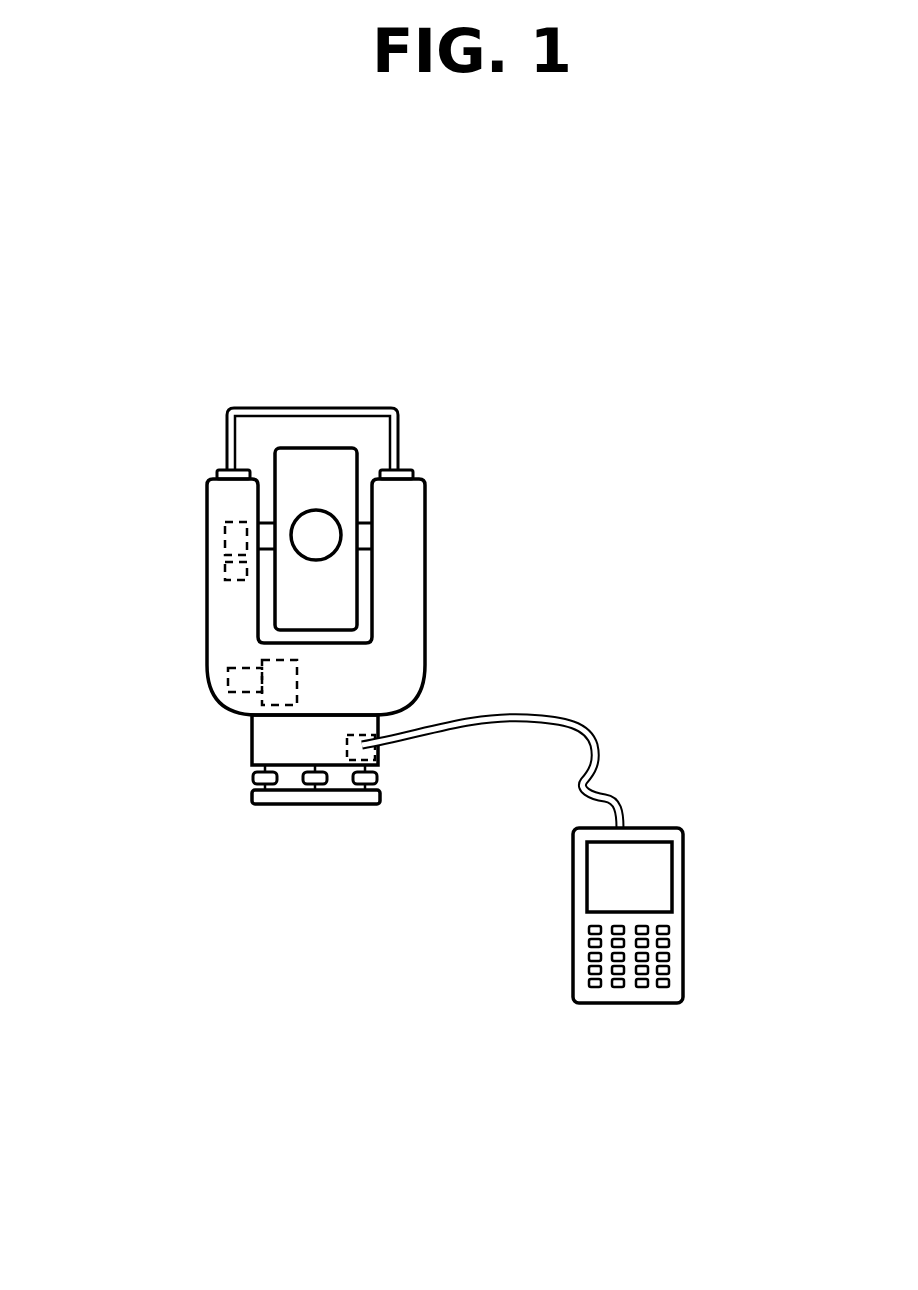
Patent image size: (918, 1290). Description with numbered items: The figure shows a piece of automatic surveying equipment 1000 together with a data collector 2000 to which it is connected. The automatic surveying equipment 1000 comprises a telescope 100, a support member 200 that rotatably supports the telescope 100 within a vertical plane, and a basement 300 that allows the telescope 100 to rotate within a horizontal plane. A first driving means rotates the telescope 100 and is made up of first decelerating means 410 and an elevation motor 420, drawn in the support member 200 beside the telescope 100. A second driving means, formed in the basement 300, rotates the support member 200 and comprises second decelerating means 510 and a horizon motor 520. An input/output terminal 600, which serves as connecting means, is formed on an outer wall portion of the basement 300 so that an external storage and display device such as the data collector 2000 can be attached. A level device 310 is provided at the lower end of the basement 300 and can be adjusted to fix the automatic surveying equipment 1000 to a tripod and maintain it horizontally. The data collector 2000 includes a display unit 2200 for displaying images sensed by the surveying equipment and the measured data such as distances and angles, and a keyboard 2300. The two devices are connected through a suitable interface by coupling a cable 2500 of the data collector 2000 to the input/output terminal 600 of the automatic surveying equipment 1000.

The telescope 100 is at (340, 463).
The support member 200 is at (405, 615).
The basement 300 is at (262, 740).
The level device 310 is at (356, 810).
The first decelerating means 410 is at (226, 533).
The elevation motor 420 is at (228, 578).
The second decelerating means 510 is at (230, 680).
The horizon motor 520 is at (265, 665).
The input/output terminal 600 is at (372, 735).
The automatic surveying equipment 1000 is at (262, 831).
The data collector 2000 is at (778, 1100).
The display unit 2200 is at (653, 872).
The keyboard 2300 is at (686, 968).
The cable 2500 is at (597, 758).